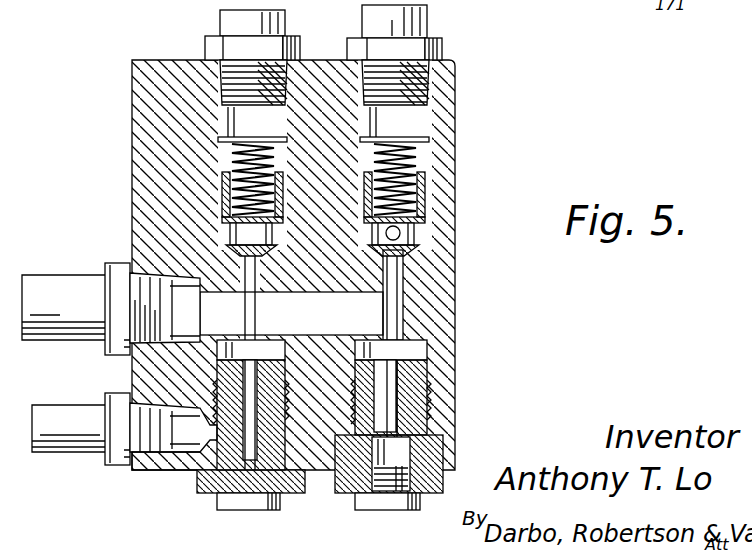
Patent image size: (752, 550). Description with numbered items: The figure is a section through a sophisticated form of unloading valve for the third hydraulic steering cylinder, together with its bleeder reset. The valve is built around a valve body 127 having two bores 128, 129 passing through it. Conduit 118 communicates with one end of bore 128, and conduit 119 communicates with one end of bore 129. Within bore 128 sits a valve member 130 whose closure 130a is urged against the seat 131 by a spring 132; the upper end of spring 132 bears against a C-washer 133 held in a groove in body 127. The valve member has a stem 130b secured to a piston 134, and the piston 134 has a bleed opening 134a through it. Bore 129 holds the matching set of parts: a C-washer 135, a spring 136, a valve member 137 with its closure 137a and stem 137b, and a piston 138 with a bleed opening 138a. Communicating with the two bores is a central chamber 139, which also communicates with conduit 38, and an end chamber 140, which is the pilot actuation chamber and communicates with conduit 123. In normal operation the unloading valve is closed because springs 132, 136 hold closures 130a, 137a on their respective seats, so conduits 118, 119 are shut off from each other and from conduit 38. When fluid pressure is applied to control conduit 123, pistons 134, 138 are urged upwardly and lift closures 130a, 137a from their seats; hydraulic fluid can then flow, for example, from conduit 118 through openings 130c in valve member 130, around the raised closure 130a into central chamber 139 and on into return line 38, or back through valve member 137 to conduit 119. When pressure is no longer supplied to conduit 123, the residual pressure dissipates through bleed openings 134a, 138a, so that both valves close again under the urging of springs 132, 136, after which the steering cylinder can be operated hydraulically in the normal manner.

The conduit 38 is at (50, 283).
The conduit 118 is at (232, 23).
The conduit 119 is at (430, 30).
The control conduit 123 is at (95, 447).
The valve body 127 is at (462, 207).
The bore 128 is at (212, 106).
The bore 129 is at (413, 127).
The valve member 130 is at (226, 186).
The closure 130a is at (232, 240).
The stem 130b is at (291, 313).
The openings 130c is at (236, 228).
The seat 131 is at (243, 233).
The spring 132 is at (238, 163).
The C-washer 133 is at (222, 140).
The piston 134 is at (130, 382).
The bleed opening 134a is at (186, 470).
The C-washer 135 is at (400, 155).
The spring 136 is at (432, 148).
The valve member 137 is at (427, 190).
The closure 137a is at (430, 243).
The stem 137b is at (382, 303).
The piston 138 is at (427, 390).
The bleed opening 138a is at (427, 413).
The central chamber 139 is at (353, 318).
The end chamber 140 is at (327, 433).